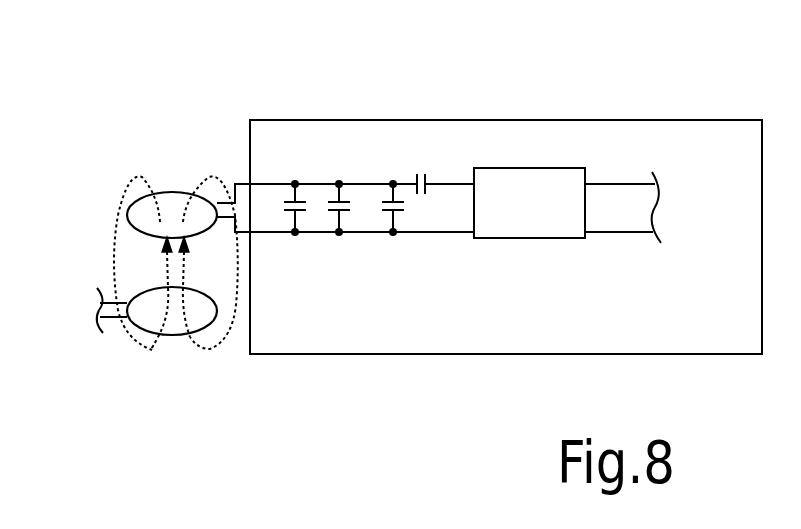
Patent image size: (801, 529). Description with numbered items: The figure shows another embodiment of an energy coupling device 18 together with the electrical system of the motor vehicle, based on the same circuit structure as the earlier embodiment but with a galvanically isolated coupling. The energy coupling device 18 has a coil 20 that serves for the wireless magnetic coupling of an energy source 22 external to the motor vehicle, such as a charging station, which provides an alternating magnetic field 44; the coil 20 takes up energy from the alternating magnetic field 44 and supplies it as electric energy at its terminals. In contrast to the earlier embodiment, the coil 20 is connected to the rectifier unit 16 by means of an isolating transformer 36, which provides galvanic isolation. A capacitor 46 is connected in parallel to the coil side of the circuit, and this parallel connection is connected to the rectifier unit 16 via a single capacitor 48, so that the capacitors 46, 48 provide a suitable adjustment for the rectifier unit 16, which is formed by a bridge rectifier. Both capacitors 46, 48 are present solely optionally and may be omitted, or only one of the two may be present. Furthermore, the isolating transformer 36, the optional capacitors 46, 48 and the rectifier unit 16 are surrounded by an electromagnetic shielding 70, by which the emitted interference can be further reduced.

The rectifier unit 16 is at (568, 168).
The energy coupling device 18 is at (104, 193).
The coil 20 is at (180, 192).
The energy source 22 is at (150, 360).
The isolating transformer 36 is at (351, 234).
The alternating magnetic field 44 is at (130, 186).
The capacitor 46 is at (395, 212).
The capacitor 48 is at (425, 186).
The electromagnetic shielding 70 is at (447, 120).